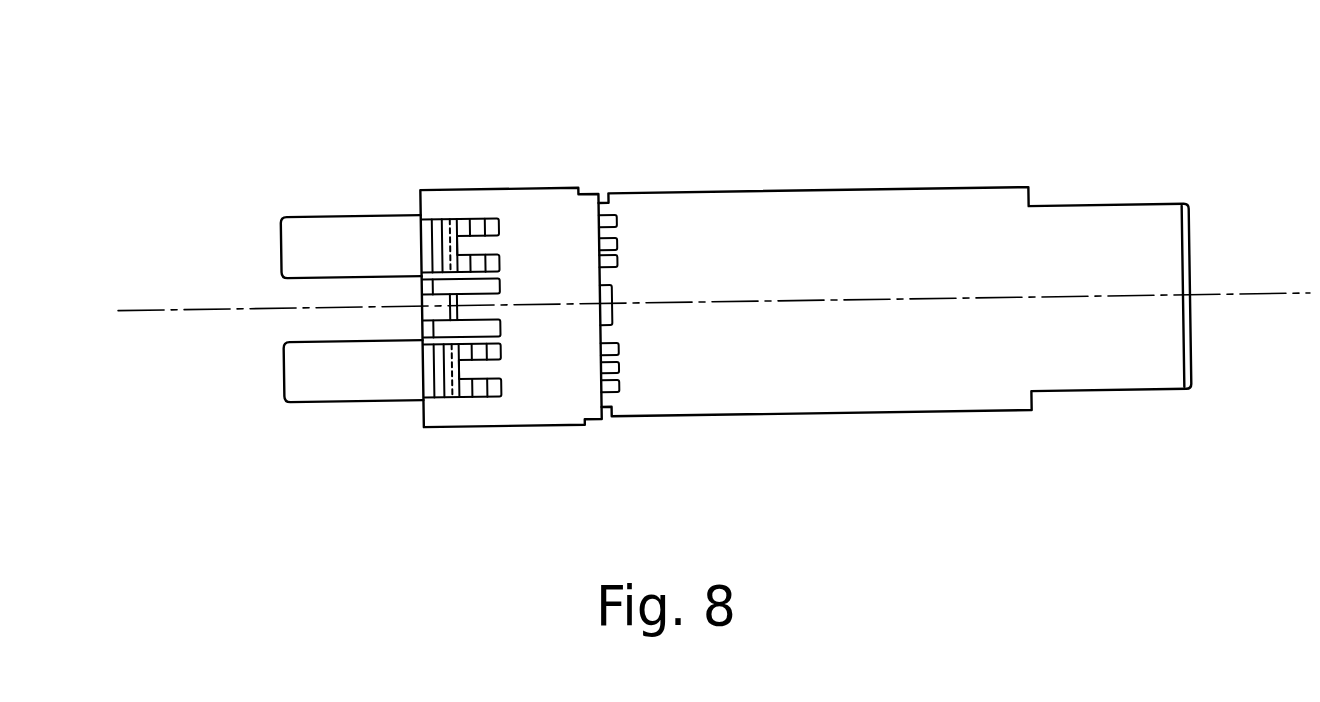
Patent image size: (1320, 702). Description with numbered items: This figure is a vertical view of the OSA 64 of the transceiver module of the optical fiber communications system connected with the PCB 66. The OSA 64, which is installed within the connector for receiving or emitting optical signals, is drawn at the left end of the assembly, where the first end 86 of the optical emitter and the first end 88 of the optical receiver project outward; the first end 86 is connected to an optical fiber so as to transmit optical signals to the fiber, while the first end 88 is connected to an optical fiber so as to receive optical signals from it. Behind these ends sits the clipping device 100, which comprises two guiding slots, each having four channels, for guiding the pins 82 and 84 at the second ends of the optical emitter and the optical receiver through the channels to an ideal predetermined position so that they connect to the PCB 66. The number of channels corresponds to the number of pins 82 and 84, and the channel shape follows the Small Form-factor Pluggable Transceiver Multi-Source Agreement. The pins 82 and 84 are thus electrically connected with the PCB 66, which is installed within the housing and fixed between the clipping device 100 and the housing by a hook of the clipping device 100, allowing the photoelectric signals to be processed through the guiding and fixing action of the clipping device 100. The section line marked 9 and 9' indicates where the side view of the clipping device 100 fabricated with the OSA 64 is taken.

The dotted line 9- 9 is at (1276, 220).
The dotted line 9-9 9' is at (147, 234).
The OSA 64 is at (182, 345).
The PCB 66 is at (970, 206).
The pins 82 is at (607, 407).
The pins 84 is at (618, 212).
The first end 86 is at (343, 378).
The first end 88 is at (343, 228).
The clipping device 100 is at (468, 200).